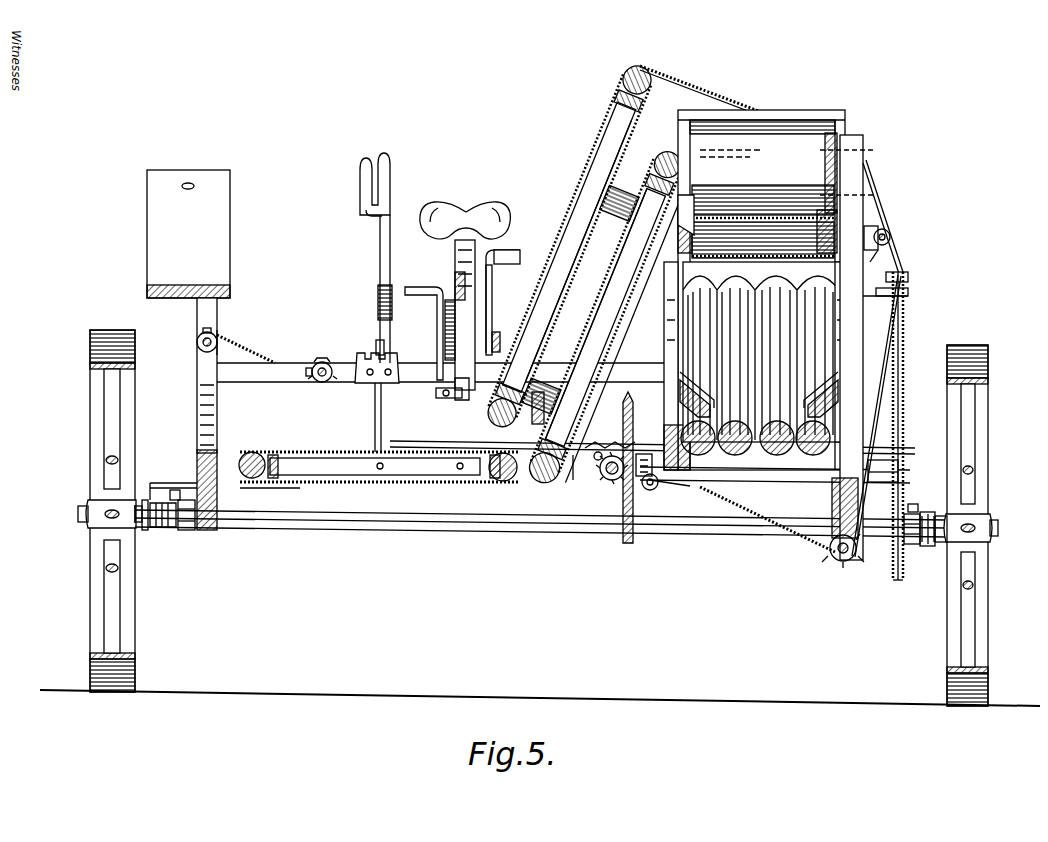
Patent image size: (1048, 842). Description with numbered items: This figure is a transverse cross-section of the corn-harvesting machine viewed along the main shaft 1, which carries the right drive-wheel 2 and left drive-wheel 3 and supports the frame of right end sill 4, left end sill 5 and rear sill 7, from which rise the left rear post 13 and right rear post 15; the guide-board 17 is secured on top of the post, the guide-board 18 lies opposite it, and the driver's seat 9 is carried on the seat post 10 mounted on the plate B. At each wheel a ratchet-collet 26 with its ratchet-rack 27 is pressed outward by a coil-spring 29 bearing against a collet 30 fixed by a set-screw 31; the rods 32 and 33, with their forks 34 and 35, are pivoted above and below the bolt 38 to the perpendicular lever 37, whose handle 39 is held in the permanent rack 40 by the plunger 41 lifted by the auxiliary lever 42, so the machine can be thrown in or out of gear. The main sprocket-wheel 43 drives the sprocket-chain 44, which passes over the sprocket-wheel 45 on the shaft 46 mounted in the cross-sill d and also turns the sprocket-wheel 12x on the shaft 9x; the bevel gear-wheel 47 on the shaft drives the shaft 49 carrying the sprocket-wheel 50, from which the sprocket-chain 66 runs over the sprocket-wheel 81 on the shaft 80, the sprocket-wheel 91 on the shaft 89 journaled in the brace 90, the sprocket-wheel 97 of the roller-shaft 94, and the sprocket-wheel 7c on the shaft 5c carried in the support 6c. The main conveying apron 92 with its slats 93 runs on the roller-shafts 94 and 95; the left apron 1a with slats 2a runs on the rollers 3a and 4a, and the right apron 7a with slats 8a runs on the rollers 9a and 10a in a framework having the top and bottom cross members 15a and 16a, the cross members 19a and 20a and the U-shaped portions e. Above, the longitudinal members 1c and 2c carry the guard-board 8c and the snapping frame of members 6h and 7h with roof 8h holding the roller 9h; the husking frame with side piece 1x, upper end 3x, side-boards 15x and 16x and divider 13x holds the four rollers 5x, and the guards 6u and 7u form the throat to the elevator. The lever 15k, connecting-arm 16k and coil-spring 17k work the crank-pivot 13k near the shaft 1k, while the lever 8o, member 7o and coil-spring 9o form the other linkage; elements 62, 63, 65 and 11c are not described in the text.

The main shaft 1 is at (78, 515).
The right drive-wheel 2 is at (92, 606).
The left drive-wheel 3 is at (988, 667).
The right end sill 4 is at (206, 533).
The left end sill 5 is at (836, 540).
The rear sill 7 is at (572, 482).
The driver's seat 9 is at (464, 205).
The seat post 10 is at (455, 252).
The left rear post 13 is at (858, 148).
The right rear post 15 is at (197, 413).
The guide-board 17 is at (147, 226).
The guide-board 18 is at (610, 482).
The ratchet-collet 26 is at (140, 505).
The coil-spring 29 is at (542, 536).
The collet 30 is at (556, 529).
The set-screw 31 is at (543, 501).
The rod 32 is at (170, 482).
The rod 33 is at (406, 441).
The fork 34 is at (146, 530).
The fork 35 is at (940, 544).
The perpendicular lever 37 is at (375, 407).
The bolt 38 is at (376, 467).
The handle 39 is at (388, 165).
The permanent rack 40 is at (360, 353).
The plunger 41 is at (386, 350).
The auxiliary lever 42 is at (366, 208).
The main sprocket-wheel 43 is at (909, 579).
The sprocket-chain 44 is at (905, 330).
The sprocket-wheel 45 is at (900, 466).
The shaft 46 is at (750, 483).
The bevel gear-wheel 47 is at (628, 546).
The shaft 49 is at (596, 460).
The sprocket-wheel 50 is at (652, 490).
The sprocket 62 is at (840, 562).
The bracket 63 is at (830, 560).
The arm 65 is at (856, 558).
The sprocket-chain 66 is at (255, 354).
The shaft 80 is at (203, 352).
The sprocket-wheel 81 is at (197, 342).
The shaft 89 is at (322, 383).
The brace 90 is at (290, 383).
The sprocket-wheel 91 is at (323, 360).
The main conveying apron 92 is at (314, 451).
The slats 93 is at (285, 452).
The roller-shaft 94 is at (250, 489).
The roller-shaft 95 is at (506, 478).
The sprocket-wheel 97 is at (250, 452).
The left-hand apron 1a is at (616, 322).
The slats 2a is at (580, 305).
The roller 3a is at (548, 472).
The upper roller 4a is at (661, 149).
The right apron 7a is at (553, 239).
The slats 8a is at (555, 237).
The roller 9a is at (561, 424).
The roller 10a is at (639, 62).
The top cross member 15a is at (608, 88).
The bottom cross member 16a is at (540, 395).
The cross member 19a is at (700, 182).
The cross member 20a is at (595, 444).
The U-shaped portions e is at (580, 299).
The cross-sill d is at (673, 495).
The plate B is at (436, 395).
The longitudinal member 1c is at (671, 364).
The longitudinal member 2c is at (838, 218).
The shaft 5c is at (892, 232).
The support 6c is at (878, 261).
The sprocket-wheel 7c is at (896, 240).
The roller 11c is at (746, 222).
The member 6h is at (822, 170).
The member 7h is at (762, 142).
The roof member 8h is at (802, 118).
The roller 9h is at (788, 186).
The guard-board 8c is at (838, 135).
The shaft 1k is at (640, 333).
The crank-pivot 13k is at (498, 340).
The lever 15k is at (503, 294).
The connecting-arm 16k is at (492, 304).
The coil-spring 17k is at (460, 400).
The member 7o is at (466, 286).
The lever 8o is at (436, 288).
The coil-spring 9o is at (445, 352).
The side piece 1x is at (855, 448).
The upper end 3x is at (838, 273).
The rollers 5x is at (698, 456).
The guard 6u is at (697, 394).
The guard 7u is at (821, 394).
The shaft 9x is at (908, 292).
The sprocket-wheel 12x is at (908, 276).
The divider 13x is at (763, 315).
The side-board 15x is at (666, 352).
The side-board 16x is at (845, 338).
The ratchet-rack 27 is at (650, 452).